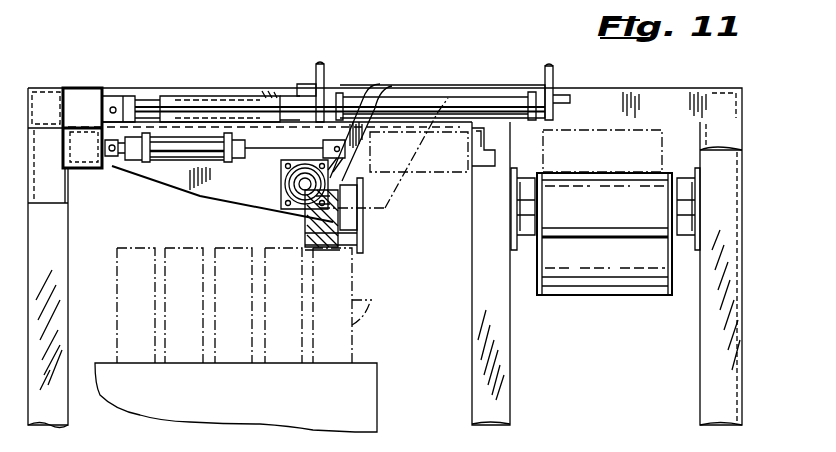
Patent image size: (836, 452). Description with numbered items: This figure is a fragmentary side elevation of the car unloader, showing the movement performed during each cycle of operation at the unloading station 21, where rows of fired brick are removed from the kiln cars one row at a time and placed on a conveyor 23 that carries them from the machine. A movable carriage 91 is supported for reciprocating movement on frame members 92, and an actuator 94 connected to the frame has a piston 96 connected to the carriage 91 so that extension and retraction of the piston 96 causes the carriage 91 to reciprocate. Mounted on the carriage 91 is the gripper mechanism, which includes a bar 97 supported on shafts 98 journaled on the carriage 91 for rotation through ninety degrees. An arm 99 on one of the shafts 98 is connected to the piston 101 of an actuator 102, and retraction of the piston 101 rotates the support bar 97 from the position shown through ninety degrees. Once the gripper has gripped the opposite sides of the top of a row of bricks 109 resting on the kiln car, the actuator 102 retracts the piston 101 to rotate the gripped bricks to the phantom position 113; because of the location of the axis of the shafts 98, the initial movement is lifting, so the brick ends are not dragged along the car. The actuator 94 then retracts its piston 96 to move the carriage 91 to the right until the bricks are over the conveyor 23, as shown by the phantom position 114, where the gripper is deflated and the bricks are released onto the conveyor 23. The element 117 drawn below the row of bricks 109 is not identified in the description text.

The unloading station 21 is at (379, 219).
The conveyor 23 is at (663, 175).
The movable carriage 91 is at (222, 200).
The frame members 92 is at (508, 88).
The actuator 94 is at (466, 100).
The piston 96 is at (244, 100).
The bar 97 is at (300, 208).
The shafts 98 is at (285, 184).
The arm 99 is at (350, 166).
The piston 101 is at (268, 139).
The actuator 102 is at (168, 160).
The row of bricks 109 is at (338, 308).
The phantom position 113 is at (418, 184).
The phantom position 114 is at (556, 139).
The tray 117 is at (358, 363).